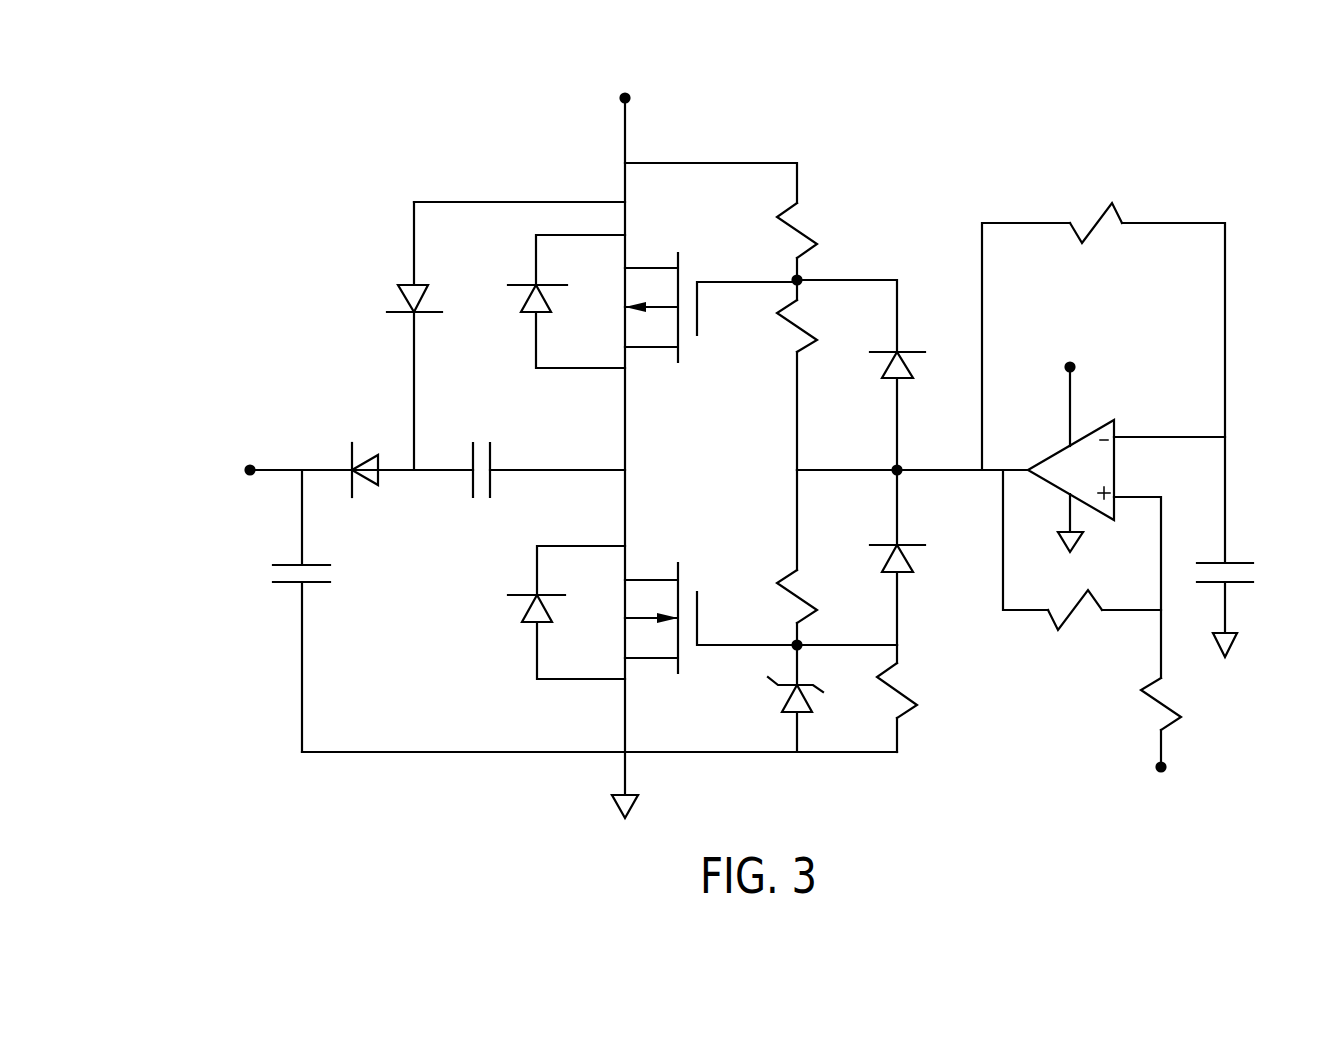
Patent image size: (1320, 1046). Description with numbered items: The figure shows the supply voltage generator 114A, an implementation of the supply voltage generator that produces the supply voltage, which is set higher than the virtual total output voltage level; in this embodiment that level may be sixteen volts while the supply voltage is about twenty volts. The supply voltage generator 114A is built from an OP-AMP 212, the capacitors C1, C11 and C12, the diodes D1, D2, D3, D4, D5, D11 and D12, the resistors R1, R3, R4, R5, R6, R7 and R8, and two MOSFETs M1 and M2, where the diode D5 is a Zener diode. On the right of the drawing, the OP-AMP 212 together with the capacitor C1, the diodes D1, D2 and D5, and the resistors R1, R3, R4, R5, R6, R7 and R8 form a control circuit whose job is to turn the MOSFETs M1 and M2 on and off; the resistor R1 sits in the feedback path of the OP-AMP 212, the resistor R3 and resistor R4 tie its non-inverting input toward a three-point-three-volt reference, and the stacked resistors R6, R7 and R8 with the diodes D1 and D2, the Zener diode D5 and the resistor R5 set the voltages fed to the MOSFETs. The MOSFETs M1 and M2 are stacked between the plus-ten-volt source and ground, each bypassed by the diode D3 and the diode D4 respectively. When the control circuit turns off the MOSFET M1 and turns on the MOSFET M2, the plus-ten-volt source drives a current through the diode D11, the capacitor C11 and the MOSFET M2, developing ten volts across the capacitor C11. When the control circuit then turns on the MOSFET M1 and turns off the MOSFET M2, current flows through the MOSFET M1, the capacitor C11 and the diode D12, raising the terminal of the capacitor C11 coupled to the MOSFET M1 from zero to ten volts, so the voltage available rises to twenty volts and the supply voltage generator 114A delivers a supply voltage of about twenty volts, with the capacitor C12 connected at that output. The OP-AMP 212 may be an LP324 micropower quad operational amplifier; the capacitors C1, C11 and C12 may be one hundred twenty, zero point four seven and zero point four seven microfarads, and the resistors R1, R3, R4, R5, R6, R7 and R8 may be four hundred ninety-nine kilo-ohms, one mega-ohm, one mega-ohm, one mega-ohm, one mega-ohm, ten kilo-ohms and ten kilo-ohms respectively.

The supply voltage generator 114A is at (300, 143).
The OP-AMP 212 is at (1095, 425).
The resistor R1 is at (1103, 363).
The resistor R3 is at (1082, 566).
The resistor R4 is at (1177, 725).
The resistor R5 is at (911, 698).
The resistor R6 is at (812, 239).
The resistor R7 is at (811, 375).
The resistor R8 is at (806, 557).
The capacitor C1 is at (1228, 593).
The capacitor C11 is at (510, 460).
The capacitor C12 is at (326, 611).
The diode D1 is at (875, 375).
The diode D2 is at (912, 557).
The diode D3 is at (566, 301).
The diode D4 is at (550, 612).
The Zener diode D5 is at (781, 698).
The diode D11 is at (506, 336).
The diode D12 is at (366, 450).
The MOSFET M1 is at (711, 314).
The MOSFET M2 is at (761, 612).